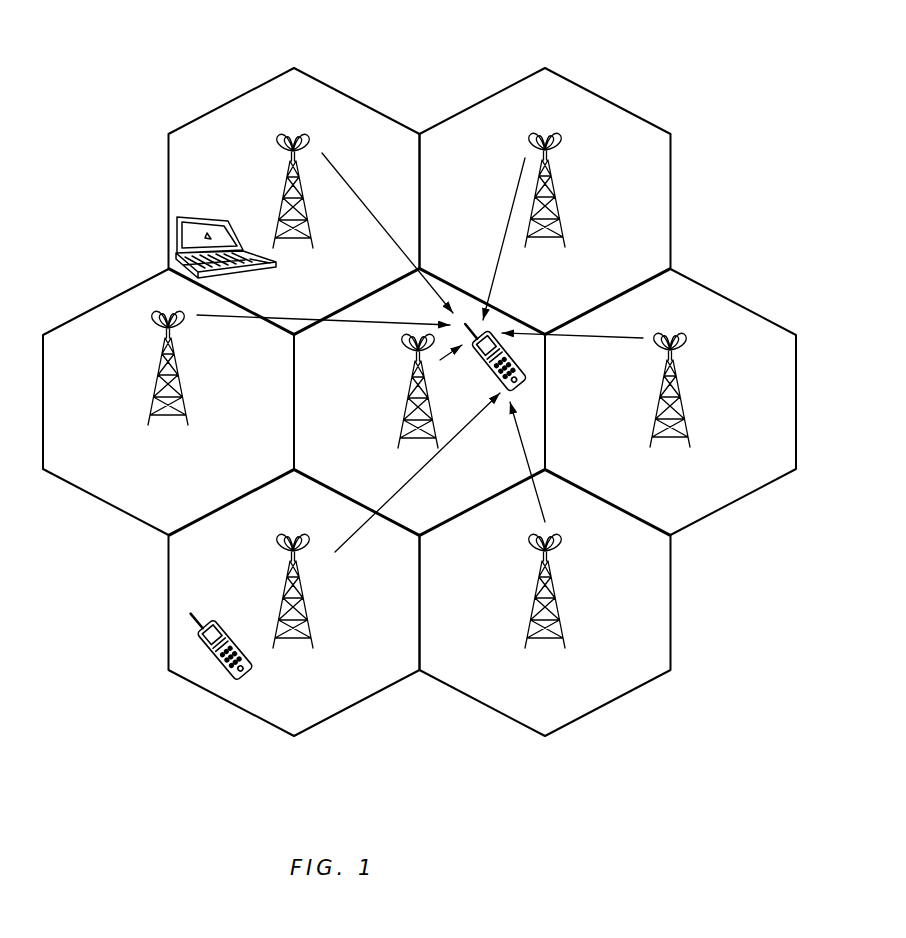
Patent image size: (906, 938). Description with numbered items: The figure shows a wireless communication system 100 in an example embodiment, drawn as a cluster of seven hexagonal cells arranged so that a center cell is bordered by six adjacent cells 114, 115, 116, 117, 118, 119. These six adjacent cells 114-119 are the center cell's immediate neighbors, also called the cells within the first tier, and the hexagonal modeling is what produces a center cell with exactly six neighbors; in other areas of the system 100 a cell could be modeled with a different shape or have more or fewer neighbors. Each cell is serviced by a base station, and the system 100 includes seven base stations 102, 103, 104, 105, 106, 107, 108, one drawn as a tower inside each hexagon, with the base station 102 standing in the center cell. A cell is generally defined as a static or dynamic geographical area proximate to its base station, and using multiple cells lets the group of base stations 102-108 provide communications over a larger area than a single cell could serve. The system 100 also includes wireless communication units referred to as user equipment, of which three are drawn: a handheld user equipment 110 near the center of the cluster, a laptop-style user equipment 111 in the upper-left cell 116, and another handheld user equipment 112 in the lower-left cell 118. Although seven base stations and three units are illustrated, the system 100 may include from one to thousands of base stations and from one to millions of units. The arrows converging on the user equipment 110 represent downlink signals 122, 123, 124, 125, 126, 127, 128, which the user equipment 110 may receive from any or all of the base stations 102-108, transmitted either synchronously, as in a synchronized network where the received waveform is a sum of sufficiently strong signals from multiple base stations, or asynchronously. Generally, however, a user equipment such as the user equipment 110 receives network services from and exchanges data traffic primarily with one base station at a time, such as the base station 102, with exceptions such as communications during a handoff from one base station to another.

The wireless communication system 100 is at (712, 43).
The base station 102 is at (408, 391).
The base station 103 is at (683, 400).
The base station 104 is at (556, 196).
The base station 105 is at (283, 195).
The base station 106 is at (160, 366).
The base station 107 is at (283, 592).
The base station 108 is at (533, 592).
The user equipment 110 is at (520, 385).
The user equipment 111 is at (260, 266).
The user equipment 112 is at (212, 660).
The cell 114 is at (730, 300).
The cell 115 is at (600, 93).
The cell 116 is at (237, 98).
The cell 117 is at (105, 304).
The cell 118 is at (258, 718).
The cell 119 is at (600, 708).
The downlink signal 122 is at (448, 360).
The downlink signal 123 is at (585, 340).
The downlink signal 124 is at (505, 226).
The downlink signal 125 is at (340, 174).
The downlink signal 126 is at (238, 318).
The downlink signal 127 is at (360, 530).
The downlink signal 128 is at (538, 507).